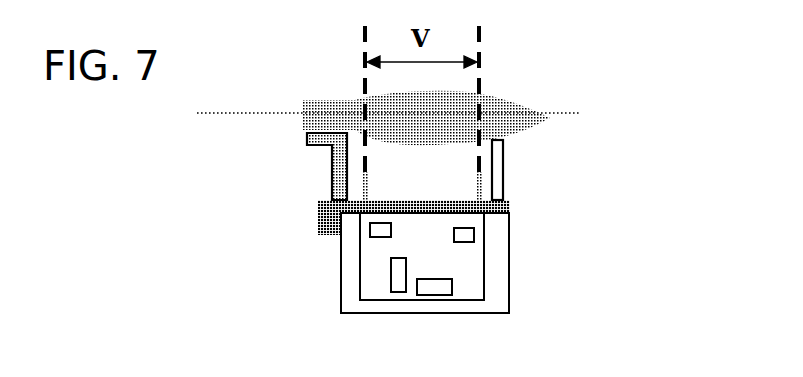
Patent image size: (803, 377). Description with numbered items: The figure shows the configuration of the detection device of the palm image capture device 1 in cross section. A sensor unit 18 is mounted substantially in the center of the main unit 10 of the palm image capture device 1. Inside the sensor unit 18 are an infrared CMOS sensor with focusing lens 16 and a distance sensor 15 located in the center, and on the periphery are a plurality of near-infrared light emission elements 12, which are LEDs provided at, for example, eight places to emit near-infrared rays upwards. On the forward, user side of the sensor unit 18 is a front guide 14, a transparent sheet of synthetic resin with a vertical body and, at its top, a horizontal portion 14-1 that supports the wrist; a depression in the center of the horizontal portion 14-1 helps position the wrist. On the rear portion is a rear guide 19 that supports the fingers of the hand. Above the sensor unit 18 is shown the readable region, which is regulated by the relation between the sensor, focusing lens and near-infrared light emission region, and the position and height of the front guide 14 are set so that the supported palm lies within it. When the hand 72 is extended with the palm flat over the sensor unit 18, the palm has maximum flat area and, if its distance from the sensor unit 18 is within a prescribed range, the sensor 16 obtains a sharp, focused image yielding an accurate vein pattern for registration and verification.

The hand 72 is at (333, 103).
The horizontal portion 14-1 is at (307, 142).
The front guide 14 is at (337, 170).
The rear guide 19 is at (505, 163).
The main unit 10 is at (345, 247).
The palm image capture device 1 is at (352, 300).
The near-infrared light emission elements 12 is at (380, 230).
The distance sensor 15 is at (400, 285).
The infrared sensor and focusing lens 16 is at (443, 288).
The sensor unit 18 is at (470, 295).